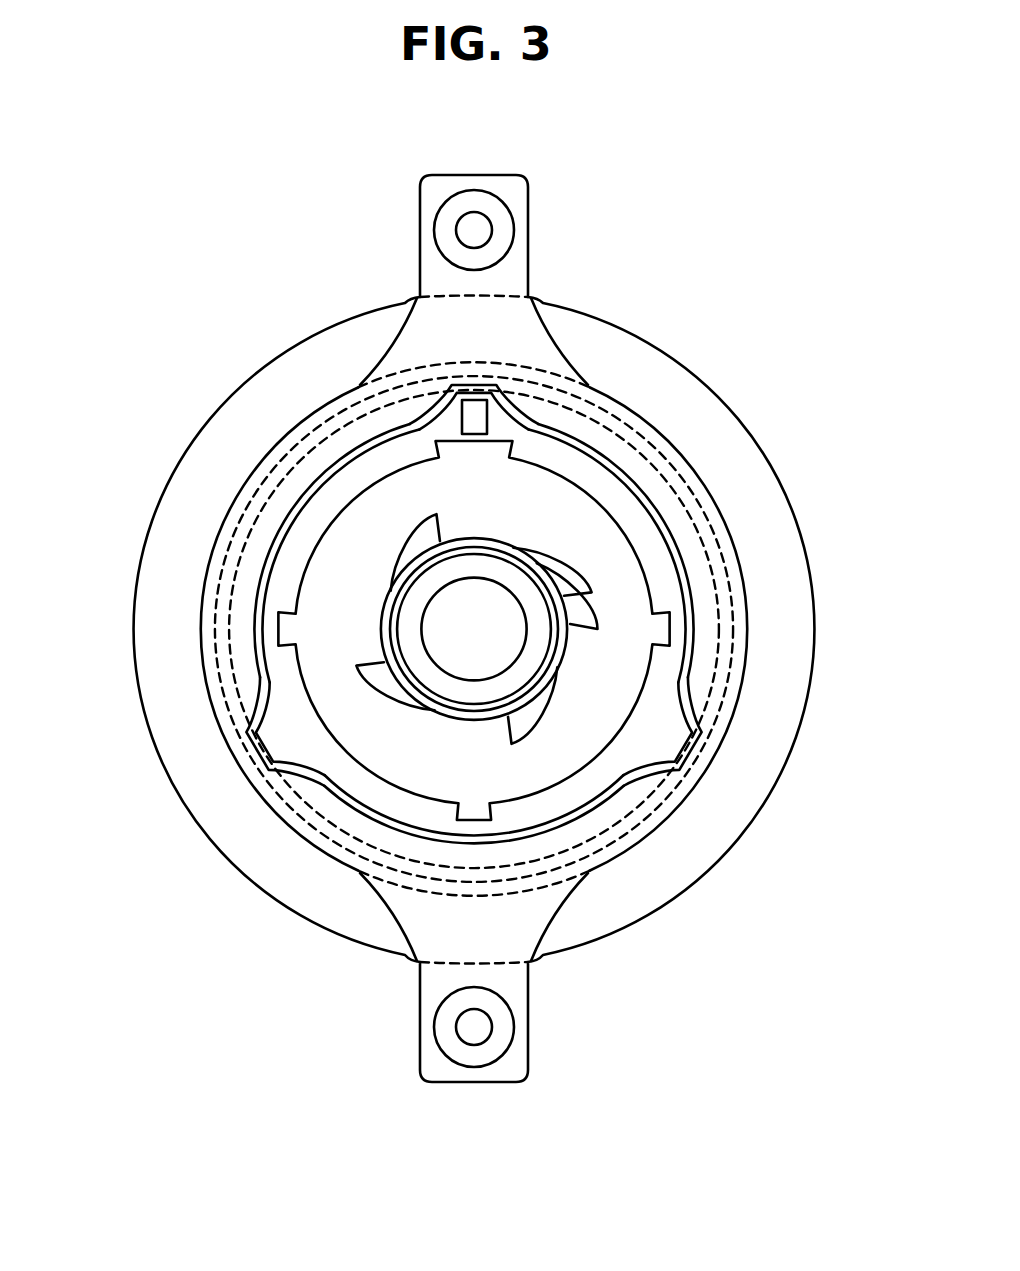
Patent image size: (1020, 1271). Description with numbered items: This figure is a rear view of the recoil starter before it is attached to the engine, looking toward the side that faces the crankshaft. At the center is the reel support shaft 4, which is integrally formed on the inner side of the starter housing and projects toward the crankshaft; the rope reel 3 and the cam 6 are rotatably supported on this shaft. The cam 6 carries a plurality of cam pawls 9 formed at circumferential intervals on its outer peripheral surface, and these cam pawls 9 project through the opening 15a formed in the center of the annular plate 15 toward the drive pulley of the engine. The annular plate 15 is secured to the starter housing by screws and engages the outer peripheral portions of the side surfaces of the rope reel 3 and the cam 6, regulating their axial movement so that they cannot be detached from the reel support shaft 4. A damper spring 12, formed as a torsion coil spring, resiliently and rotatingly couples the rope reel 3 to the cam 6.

The rope reel 3 is at (648, 340).
The reel support shaft 4 is at (533, 593).
The cam 6 is at (383, 615).
The cam pawls 9 is at (357, 664).
The damper spring 12 is at (487, 420).
The annular plate 15 is at (387, 352).
The opening 15a is at (337, 477).